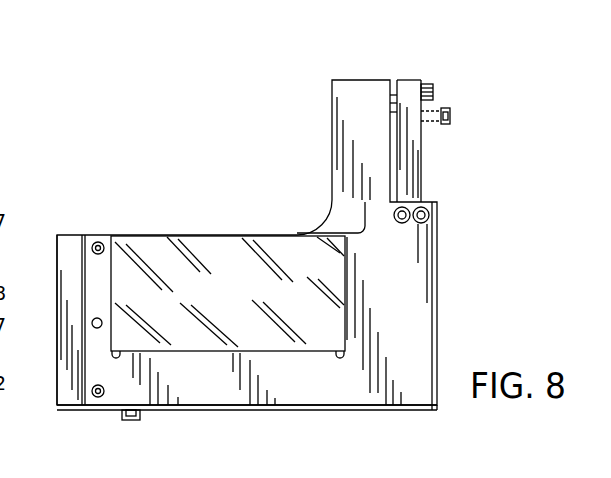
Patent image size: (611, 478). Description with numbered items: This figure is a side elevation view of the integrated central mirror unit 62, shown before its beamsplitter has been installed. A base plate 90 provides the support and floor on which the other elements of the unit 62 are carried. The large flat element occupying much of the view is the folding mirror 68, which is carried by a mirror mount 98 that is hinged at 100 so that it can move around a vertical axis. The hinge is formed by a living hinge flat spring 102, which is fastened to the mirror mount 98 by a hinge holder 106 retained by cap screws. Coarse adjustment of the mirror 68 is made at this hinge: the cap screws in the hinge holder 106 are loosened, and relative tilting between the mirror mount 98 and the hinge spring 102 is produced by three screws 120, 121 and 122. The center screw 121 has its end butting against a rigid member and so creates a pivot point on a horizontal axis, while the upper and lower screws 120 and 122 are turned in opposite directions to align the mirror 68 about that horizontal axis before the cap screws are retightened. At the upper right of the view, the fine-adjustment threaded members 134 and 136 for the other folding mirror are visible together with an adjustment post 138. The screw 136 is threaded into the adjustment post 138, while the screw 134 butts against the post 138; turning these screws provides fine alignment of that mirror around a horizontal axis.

The integrated central mirror unit 62 is at (448, 300).
The folding mirror 68 is at (233, 256).
The base plate 90 is at (315, 411).
The mirror mount 98 is at (203, 385).
The hinge 100 is at (86, 235).
The living hinge flat spring 102 is at (82, 411).
The hinge holder 106 is at (63, 372).
The screw 120 is at (103, 244).
The center screw 121 is at (92, 327).
The screw 122 is at (97, 398).
The screw 134 is at (453, 118).
The screw 136 is at (430, 88).
The adjustment post 138 is at (357, 97).